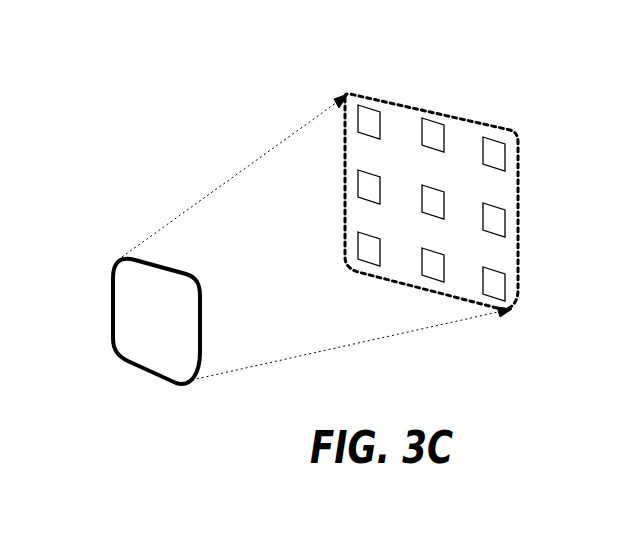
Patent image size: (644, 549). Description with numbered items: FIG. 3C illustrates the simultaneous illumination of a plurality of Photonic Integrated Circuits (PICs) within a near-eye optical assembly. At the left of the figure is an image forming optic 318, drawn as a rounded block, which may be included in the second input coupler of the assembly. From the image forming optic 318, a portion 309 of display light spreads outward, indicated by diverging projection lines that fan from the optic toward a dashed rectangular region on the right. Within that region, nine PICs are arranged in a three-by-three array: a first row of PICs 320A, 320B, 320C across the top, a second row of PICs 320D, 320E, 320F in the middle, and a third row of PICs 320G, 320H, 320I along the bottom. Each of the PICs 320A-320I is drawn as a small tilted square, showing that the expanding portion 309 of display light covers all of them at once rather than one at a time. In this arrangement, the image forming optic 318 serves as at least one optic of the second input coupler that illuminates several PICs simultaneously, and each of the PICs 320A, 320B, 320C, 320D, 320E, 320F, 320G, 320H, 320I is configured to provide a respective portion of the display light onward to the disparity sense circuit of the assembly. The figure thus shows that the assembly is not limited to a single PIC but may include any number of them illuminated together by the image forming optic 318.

The image forming optic 318 is at (142, 372).
The portion of display light 309 is at (205, 203).
The photonic integrated circuit 320A is at (373, 117).
The photonic integrated circuit 320B is at (435, 130).
The photonic integrated circuit 320C is at (497, 150).
The photonic integrated circuit 320D is at (368, 185).
The photonic integrated circuit 320E is at (432, 202).
The photonic integrated circuit 320F is at (494, 227).
The photonic integrated circuit 320G is at (366, 254).
The photonic integrated circuit 320H is at (433, 270).
The photonic integrated circuit 320I is at (494, 292).